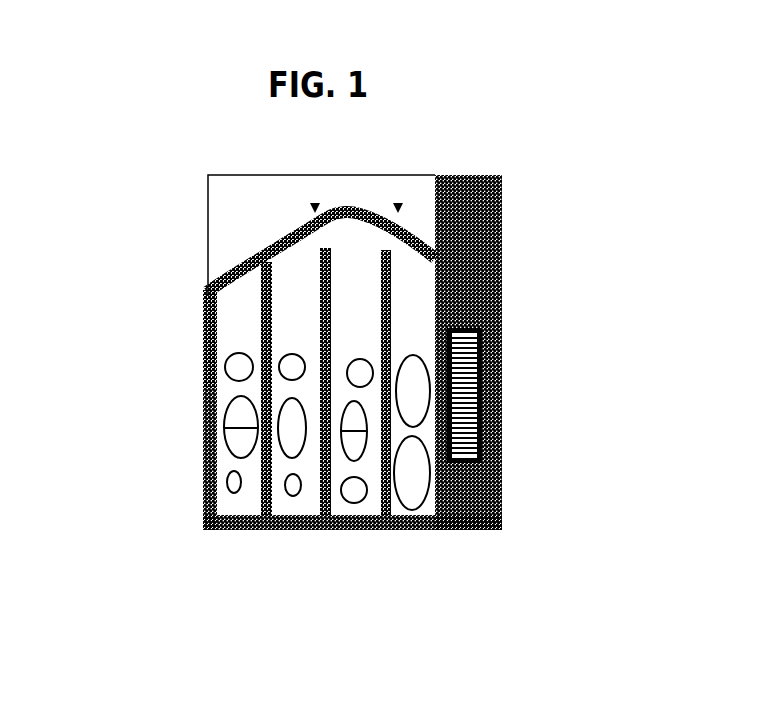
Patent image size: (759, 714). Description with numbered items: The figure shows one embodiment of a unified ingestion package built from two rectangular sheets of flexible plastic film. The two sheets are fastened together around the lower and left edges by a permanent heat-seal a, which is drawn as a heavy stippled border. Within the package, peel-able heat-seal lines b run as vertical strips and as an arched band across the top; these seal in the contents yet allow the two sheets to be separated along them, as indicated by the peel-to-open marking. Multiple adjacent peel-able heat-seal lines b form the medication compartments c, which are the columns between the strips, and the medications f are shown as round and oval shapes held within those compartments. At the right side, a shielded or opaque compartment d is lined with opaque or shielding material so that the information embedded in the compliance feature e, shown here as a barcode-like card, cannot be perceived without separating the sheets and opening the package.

The permanent heat-seal a is at (207, 511).
The peel-able heat-seal lines b is at (265, 328).
The medication compartments c is at (300, 310).
The shielded or opaque compartment d is at (480, 319).
The compliance feature e is at (476, 426).
The medications f is at (343, 492).